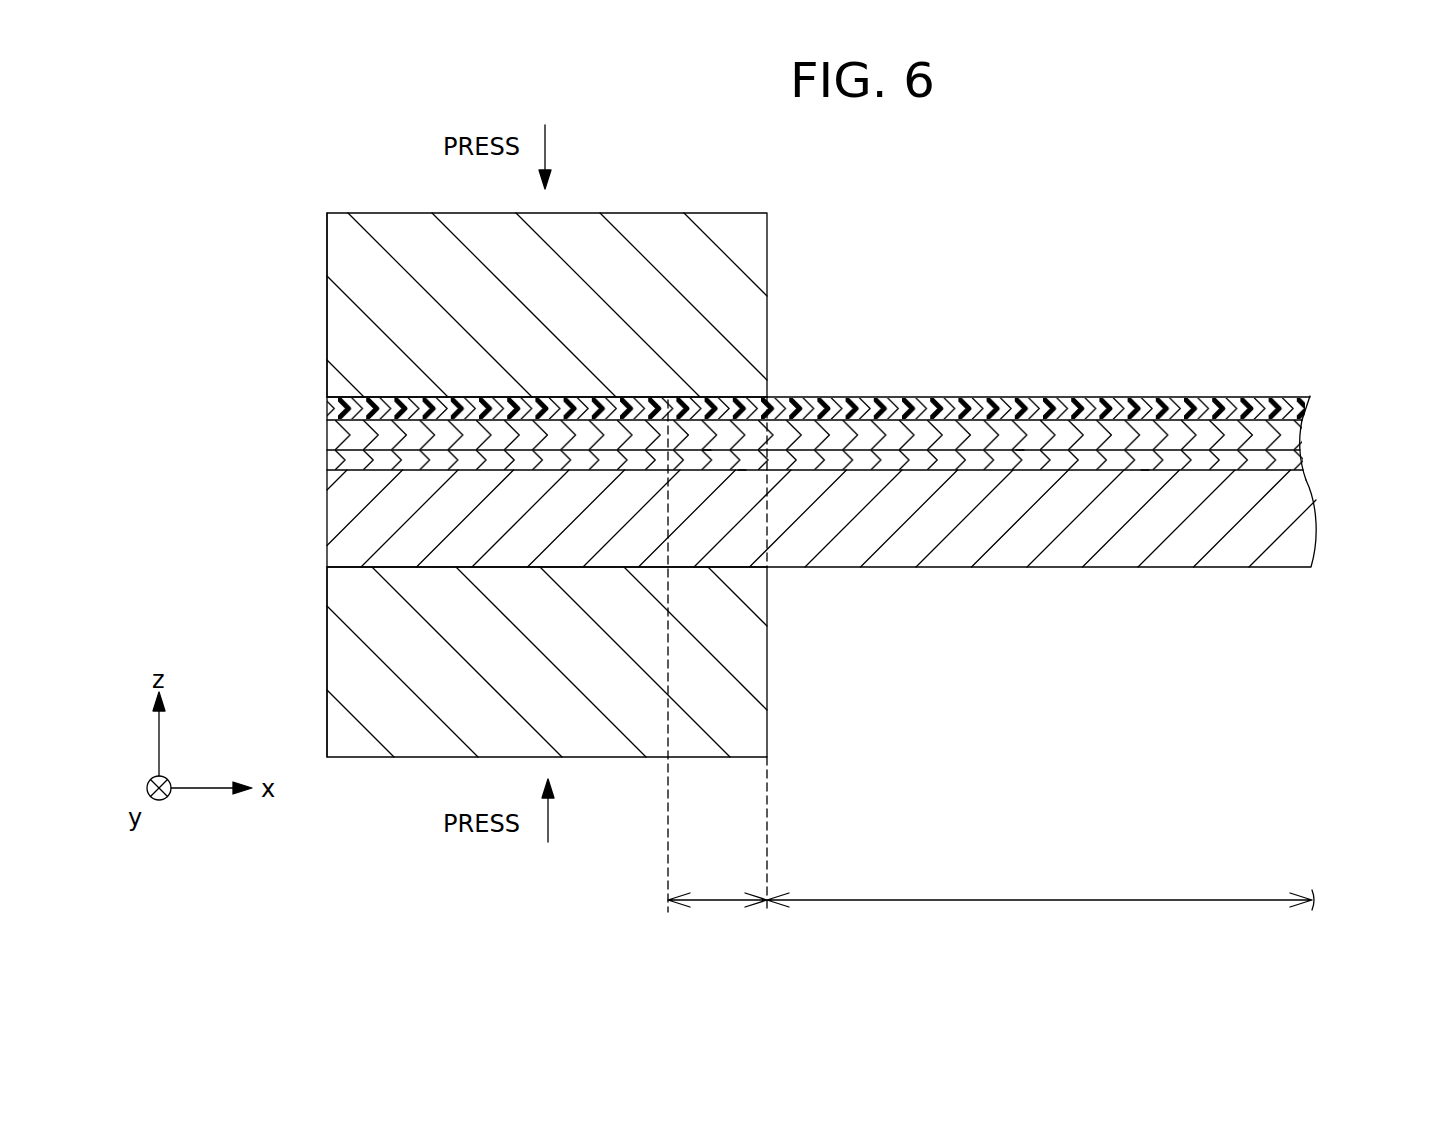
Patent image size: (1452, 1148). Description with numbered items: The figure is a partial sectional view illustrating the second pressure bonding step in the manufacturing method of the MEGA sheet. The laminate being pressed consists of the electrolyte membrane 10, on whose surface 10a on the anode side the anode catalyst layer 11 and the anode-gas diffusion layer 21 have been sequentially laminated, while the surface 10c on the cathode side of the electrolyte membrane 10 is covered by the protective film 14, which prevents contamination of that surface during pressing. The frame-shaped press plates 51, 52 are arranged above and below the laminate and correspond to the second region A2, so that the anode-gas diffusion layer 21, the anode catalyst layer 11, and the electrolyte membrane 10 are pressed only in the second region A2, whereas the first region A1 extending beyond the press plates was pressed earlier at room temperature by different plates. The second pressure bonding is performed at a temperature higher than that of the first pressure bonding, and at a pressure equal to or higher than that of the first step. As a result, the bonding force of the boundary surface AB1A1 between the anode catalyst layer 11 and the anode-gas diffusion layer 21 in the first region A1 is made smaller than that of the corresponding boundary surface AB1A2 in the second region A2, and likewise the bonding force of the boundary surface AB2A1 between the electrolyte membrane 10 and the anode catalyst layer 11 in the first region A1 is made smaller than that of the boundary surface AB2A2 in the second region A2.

The frame-shaped press plate 52 is at (340, 307).
The frame-shaped press plate 51 is at (340, 664).
The electrolyte membrane 10 is at (1287, 436).
The surface on the anode side 10a is at (1240, 465).
The surface on the cathode side 10c is at (1253, 400).
The anode catalyst layer 11 is at (1295, 458).
The protective film 14 is at (1282, 411).
The anode-gas diffusion layer 21 is at (1293, 537).
The boundary surface AB2A2 is at (707, 451).
The boundary surface AB1A2 is at (742, 470).
The boundary surface AB2A1 is at (1020, 450).
The boundary surface AB1A1 is at (1145, 469).
The second region A2 is at (717, 918).
The first region A1 is at (1040, 917).